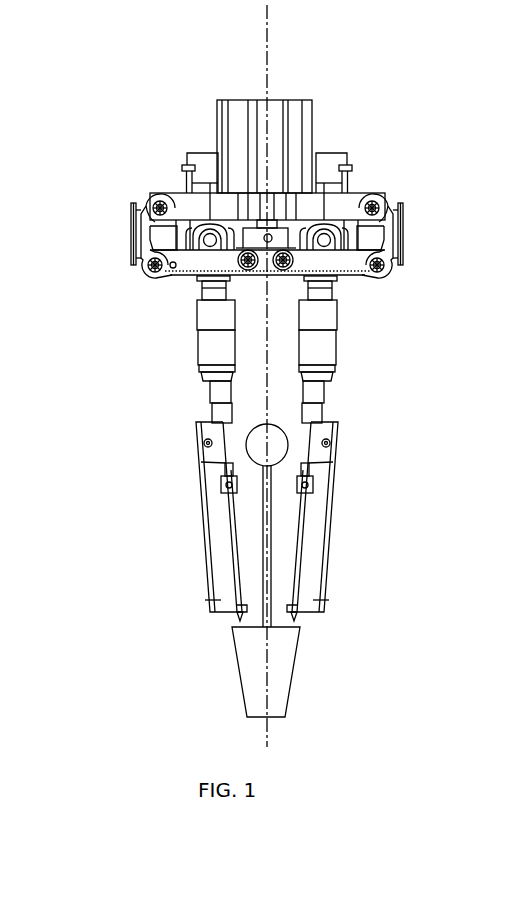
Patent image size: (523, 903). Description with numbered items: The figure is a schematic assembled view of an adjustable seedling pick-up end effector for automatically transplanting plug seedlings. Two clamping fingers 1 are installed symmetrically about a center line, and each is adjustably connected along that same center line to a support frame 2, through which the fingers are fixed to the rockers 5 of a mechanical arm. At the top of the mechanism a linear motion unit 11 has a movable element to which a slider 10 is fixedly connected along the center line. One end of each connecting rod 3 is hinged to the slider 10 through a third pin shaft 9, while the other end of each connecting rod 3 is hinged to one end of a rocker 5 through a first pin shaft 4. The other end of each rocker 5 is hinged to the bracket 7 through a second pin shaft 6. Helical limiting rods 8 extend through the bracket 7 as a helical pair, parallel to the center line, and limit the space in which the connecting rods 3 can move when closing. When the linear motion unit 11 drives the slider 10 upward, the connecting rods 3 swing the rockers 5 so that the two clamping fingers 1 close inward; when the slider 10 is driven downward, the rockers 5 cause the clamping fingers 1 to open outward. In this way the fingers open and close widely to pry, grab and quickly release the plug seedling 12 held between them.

The clamping finger 1 is at (148, 353).
The support frame 2 is at (148, 292).
The connecting rod 3 is at (119, 287).
The first pin shaft 4 is at (112, 245).
The rocker 5 is at (119, 218).
The second pin shaft 6 is at (114, 166).
The bracket 7 is at (223, 139).
The helical limiting rod 8 is at (140, 99).
The third pin shaft 9 is at (212, 126).
The slider 10 is at (234, 123).
The linear motion unit 11 is at (294, 99).
The plug seedling 12 is at (320, 672).